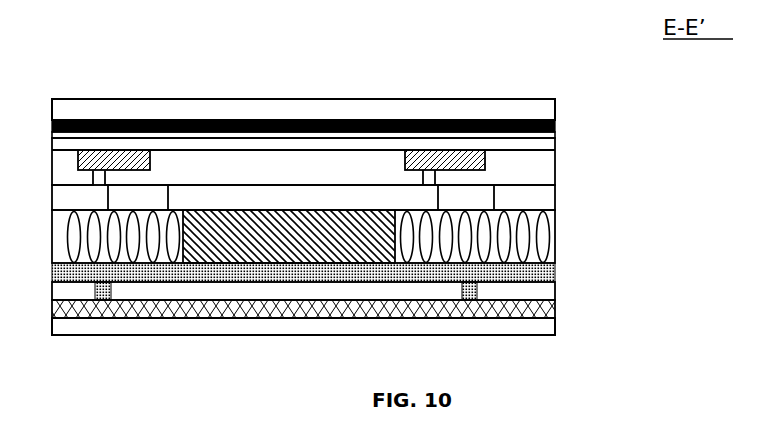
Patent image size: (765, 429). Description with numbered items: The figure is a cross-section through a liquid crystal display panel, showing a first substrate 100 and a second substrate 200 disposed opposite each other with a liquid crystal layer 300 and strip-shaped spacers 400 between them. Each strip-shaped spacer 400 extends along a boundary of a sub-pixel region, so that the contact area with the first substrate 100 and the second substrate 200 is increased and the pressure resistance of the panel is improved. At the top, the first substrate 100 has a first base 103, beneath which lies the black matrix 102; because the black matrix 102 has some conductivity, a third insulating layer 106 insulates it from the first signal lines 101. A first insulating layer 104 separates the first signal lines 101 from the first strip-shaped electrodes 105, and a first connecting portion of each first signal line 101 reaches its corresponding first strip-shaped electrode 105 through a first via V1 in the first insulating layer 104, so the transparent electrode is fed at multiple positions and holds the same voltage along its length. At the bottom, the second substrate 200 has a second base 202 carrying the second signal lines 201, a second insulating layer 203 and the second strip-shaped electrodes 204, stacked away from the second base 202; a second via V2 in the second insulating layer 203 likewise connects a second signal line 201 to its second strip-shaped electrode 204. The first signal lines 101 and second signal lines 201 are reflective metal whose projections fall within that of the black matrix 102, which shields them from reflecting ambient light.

The first substrate 100 is at (374, 139).
The first signal line 101 is at (470, 157).
The black matrix 102 is at (557, 124).
The first base 103 is at (545, 104).
The first insulating layer 104 is at (521, 171).
The first strip-shaped electrode 105 is at (342, 199).
The third insulating layer 106 is at (528, 143).
The second substrate 200 is at (374, 310).
The second signal line 201 is at (529, 309).
The second base 202 is at (340, 335).
The second insulating layer 203 is at (529, 290).
The second strip-shaped electrode 204 is at (540, 272).
The liquid crystal layer 300 is at (548, 217).
The strip-shaped spacer 400 is at (382, 244).
The first via V1 is at (424, 174).
The second via hole V2 is at (96, 290).